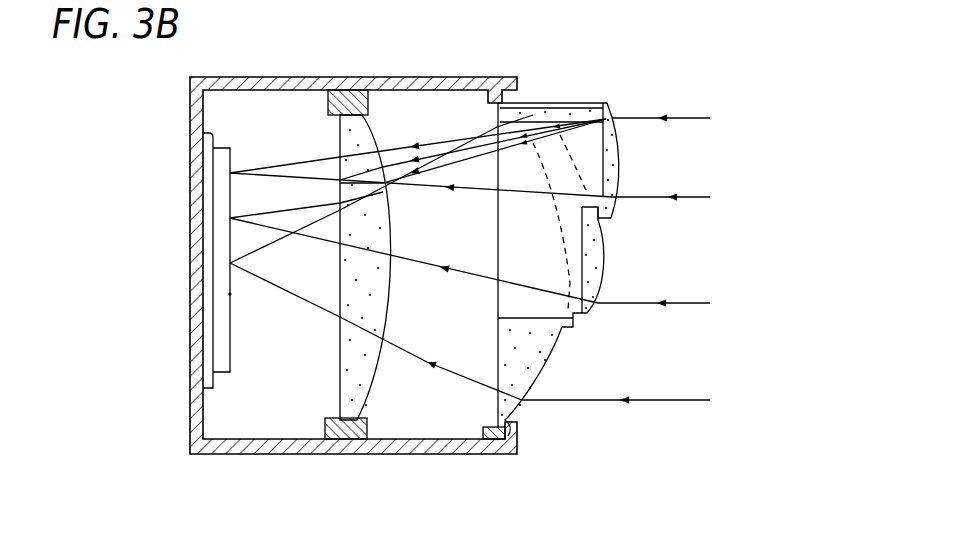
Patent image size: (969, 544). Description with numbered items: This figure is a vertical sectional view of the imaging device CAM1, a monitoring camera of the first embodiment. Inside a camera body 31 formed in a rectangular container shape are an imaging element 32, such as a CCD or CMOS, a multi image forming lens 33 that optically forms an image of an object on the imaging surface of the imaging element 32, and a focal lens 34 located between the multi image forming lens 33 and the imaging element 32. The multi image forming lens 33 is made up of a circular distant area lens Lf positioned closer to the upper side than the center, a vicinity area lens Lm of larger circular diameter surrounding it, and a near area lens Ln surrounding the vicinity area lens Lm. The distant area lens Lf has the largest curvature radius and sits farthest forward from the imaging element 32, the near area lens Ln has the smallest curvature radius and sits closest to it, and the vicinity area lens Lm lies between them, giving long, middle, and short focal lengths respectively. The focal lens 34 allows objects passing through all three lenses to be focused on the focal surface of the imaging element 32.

The imaging device CAM1 is at (442, 77).
The camera body 31 is at (273, 455).
The imaging element 32 is at (230, 294).
The multi image forming lens 33 is at (578, 240).
The focal lens 34 is at (340, 138).
The distant area lens Lf is at (621, 161).
The vicinity area lens Lm is at (603, 267).
The near area lens Ln is at (545, 369).